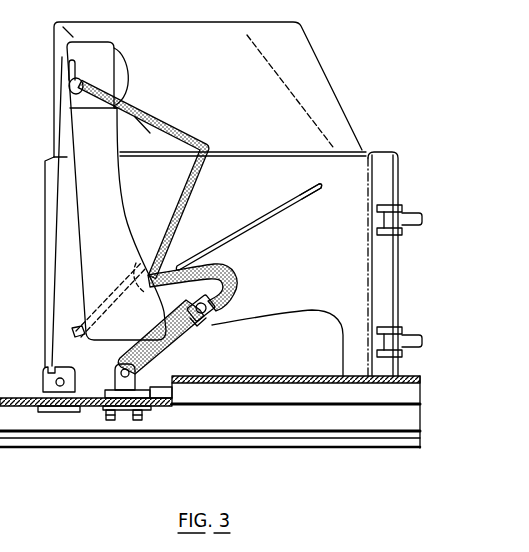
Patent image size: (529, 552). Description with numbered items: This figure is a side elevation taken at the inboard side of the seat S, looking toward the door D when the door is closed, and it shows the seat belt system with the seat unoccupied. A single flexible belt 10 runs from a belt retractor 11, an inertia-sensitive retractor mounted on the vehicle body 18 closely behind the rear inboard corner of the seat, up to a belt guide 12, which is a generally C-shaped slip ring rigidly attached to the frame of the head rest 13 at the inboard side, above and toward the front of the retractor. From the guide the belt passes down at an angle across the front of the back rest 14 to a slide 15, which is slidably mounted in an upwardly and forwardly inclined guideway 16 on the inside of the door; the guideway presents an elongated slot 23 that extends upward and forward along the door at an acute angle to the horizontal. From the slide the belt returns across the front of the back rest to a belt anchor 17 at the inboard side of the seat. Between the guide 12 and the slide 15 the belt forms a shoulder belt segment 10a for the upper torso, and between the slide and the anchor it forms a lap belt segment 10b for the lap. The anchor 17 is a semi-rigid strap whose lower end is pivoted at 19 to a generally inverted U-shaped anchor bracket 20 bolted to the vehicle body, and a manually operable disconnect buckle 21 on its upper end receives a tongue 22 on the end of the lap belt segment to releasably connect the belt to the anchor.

The flexible belt 10 is at (55, 214).
The shoulder belt segment 10a is at (173, 125).
The lap belt segment 10b is at (233, 270).
The belt retractor 11 is at (52, 390).
The belt guide 12 is at (79, 78).
The head rest 13 is at (130, 63).
The back rest 14 is at (104, 170).
The slide 15 is at (131, 297).
The guideway 16 is at (240, 238).
The belt anchor 17 is at (182, 350).
The vehicle body 18 is at (18, 404).
The pivot 19 is at (122, 369).
The anchor bracket 20 is at (152, 405).
The disconnect buckle 21 is at (203, 319).
The tongue 22 is at (208, 304).
The slot 23 is at (298, 203).
The door D is at (346, 163).
The seat S is at (326, 320).